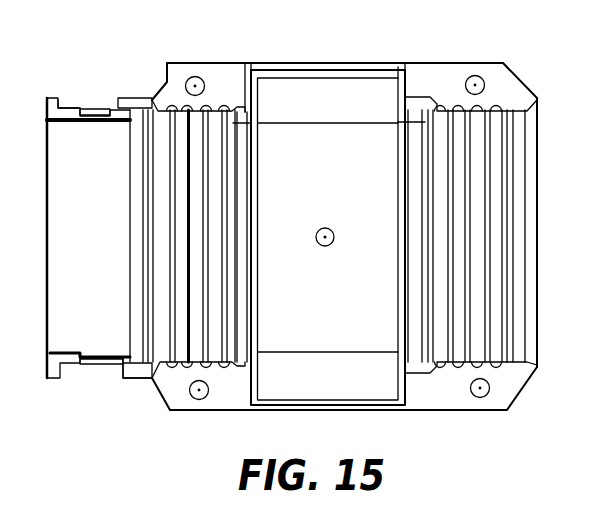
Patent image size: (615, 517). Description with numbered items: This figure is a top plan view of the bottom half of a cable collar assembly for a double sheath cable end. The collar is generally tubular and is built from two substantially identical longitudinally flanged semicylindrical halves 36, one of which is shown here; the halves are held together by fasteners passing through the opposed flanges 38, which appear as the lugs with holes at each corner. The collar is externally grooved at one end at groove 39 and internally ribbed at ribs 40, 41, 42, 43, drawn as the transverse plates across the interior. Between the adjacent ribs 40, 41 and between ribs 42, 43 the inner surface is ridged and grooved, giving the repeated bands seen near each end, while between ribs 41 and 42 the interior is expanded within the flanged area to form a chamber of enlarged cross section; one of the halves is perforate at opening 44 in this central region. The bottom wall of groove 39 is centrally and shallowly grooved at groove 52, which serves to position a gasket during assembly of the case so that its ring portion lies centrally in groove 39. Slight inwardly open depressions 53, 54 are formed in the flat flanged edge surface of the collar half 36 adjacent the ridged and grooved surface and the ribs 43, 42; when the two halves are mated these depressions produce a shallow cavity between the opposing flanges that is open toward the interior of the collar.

The semicylindrical half 36 is at (537, 112).
The flange 38 is at (217, 63).
The groove 39 is at (63, 98).
The rib 40 is at (527, 118).
The rib 41 is at (395, 127).
The rib 42 is at (250, 123).
The rib 43 is at (128, 123).
The opening 44 is at (325, 246).
The groove 52 is at (78, 107).
The depression 53 is at (137, 107).
The depression 54 is at (240, 97).